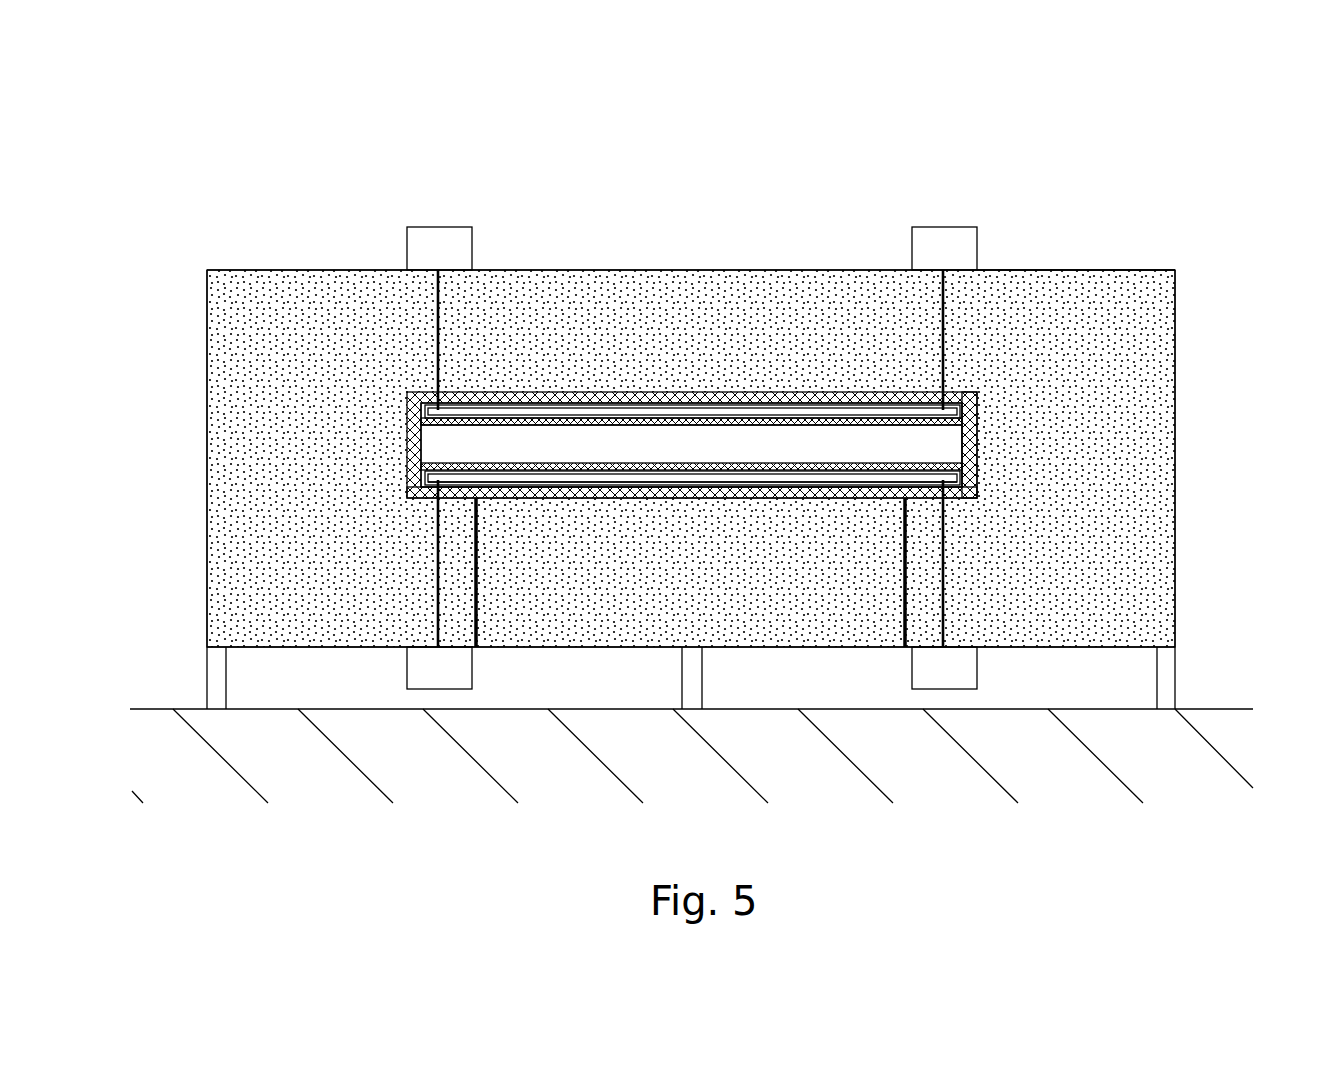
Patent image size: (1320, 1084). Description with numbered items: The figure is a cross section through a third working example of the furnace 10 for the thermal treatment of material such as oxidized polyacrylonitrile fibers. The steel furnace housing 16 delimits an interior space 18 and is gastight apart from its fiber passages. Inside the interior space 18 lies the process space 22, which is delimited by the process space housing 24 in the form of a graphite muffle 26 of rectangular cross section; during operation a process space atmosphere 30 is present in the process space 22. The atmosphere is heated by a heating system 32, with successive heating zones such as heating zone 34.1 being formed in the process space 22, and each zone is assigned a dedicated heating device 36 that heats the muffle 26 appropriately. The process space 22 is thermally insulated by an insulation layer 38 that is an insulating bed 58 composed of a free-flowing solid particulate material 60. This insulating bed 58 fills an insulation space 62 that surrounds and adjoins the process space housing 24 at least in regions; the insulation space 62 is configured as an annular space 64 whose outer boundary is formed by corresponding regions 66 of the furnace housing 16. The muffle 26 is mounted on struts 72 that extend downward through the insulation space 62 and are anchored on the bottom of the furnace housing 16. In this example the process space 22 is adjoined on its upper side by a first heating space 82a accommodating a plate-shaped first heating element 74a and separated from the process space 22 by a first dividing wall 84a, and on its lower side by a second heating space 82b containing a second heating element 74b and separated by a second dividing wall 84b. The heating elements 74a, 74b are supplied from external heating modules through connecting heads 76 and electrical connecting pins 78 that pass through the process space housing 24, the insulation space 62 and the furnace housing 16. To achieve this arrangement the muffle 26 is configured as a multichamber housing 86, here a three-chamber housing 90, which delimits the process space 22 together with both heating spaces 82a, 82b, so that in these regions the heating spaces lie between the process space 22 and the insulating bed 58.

The furnace 10 is at (328, 130).
The furnace housing 16 is at (264, 255).
The interior space 18 is at (319, 277).
The process space 22 is at (655, 446).
The process space housing 24 is at (658, 378).
The muffle 26 is at (820, 478).
The process space atmosphere 30 is at (780, 445).
The heating system 32 is at (988, 205).
The heating zone 34.1 is at (1131, 209).
The heating device 36 is at (1022, 230).
The insulation layer 38 is at (1145, 332).
The insulating bed 58 is at (1144, 383).
The solid particulate material 60 is at (1130, 483).
The insulation space 62 is at (1157, 618).
The annular space 64 is at (235, 433).
The regions of the furnace housing 66 is at (537, 281).
The struts 72 is at (477, 625).
The first heating element 74a is at (850, 412).
The second heating element 74b is at (843, 486).
The connecting heads 76 is at (428, 240).
The electrical connecting pins 78 is at (437, 327).
The first heating space 82a is at (714, 398).
The second heating space 82b is at (748, 502).
The first dividing wall 84a is at (585, 416).
The second dividing wall 84b is at (605, 478).
The multichamber housing 86 is at (540, 503).
The three-chamber housing 90 is at (977, 450).